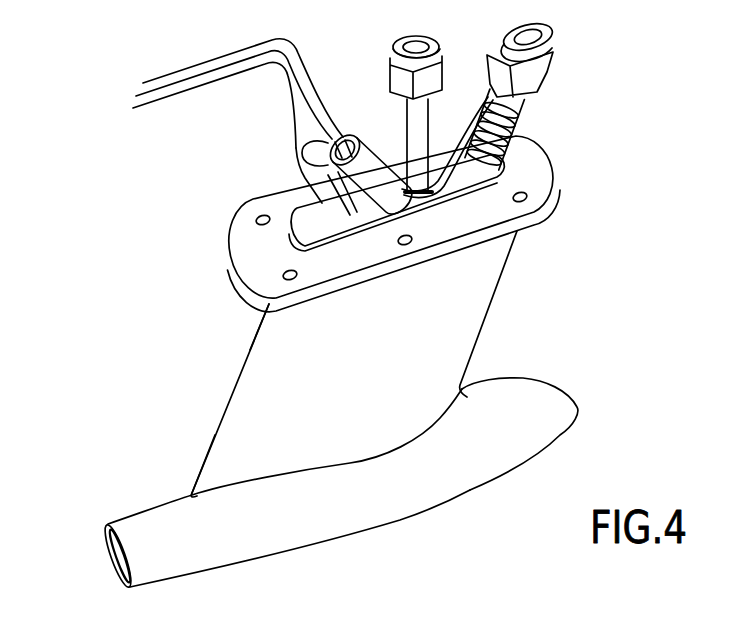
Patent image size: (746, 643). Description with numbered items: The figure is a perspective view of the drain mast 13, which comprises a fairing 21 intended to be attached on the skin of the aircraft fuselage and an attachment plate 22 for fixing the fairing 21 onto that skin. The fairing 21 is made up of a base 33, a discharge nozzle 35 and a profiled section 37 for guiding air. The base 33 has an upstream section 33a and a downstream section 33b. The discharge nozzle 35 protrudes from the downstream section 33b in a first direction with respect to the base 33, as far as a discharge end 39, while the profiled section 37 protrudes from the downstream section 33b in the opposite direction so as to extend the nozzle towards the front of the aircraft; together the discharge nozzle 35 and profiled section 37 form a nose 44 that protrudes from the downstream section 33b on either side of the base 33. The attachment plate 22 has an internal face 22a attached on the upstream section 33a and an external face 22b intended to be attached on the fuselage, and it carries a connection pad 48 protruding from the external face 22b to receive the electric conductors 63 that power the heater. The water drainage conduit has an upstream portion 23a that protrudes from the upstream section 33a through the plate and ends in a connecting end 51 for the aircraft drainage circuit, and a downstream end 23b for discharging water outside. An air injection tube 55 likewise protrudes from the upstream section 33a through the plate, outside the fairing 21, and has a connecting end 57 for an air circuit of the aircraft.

The drain mast 13 is at (598, 343).
The fairing 21 is at (477, 308).
The attachment plate 22 is at (232, 236).
The internal face 22a is at (240, 288).
The external face 22b is at (250, 242).
The upstream portion 23a is at (507, 113).
The downstream end 23b is at (122, 560).
The base 33 is at (250, 388).
The upstream section 33a is at (262, 312).
The downstream section 33b is at (202, 457).
The discharge nozzle 35 is at (167, 523).
The profiled section 37 is at (577, 407).
The discharge end 39 is at (108, 527).
The nose 44 is at (358, 498).
The connection pad 48 is at (347, 137).
The connecting end 51 is at (560, 45).
The air injection tube 55 is at (412, 144).
The connecting end 57 is at (402, 40).
The electric conductors 63 is at (222, 57).